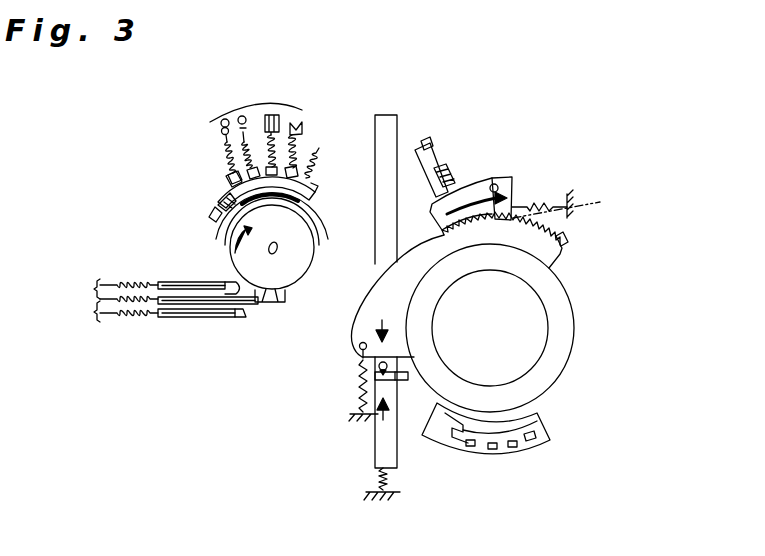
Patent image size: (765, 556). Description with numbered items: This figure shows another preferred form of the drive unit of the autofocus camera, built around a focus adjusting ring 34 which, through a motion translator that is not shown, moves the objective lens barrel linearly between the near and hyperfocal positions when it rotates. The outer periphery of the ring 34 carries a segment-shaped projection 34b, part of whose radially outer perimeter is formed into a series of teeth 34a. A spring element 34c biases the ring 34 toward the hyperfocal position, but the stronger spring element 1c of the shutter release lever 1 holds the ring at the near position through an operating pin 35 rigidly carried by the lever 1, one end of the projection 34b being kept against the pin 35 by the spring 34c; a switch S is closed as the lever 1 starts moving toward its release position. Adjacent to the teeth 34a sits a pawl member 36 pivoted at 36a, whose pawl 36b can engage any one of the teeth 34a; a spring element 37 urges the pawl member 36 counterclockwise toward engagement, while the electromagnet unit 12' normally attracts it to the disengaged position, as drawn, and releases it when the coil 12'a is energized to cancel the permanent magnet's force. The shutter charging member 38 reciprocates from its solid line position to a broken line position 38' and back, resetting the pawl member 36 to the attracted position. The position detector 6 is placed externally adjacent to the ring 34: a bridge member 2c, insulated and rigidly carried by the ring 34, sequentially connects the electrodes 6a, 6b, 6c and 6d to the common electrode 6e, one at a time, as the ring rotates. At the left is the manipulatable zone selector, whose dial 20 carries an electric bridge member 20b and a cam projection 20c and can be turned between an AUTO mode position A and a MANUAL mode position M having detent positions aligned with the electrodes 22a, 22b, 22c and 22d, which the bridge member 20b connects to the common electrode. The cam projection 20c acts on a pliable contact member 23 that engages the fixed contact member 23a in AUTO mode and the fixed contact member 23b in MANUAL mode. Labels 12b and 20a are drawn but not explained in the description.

The shutter release lever 1 is at (375, 205).
The spring element 1c is at (368, 485).
The switch S is at (407, 377).
The bridge member 2c is at (438, 437).
The position detector 6 is at (548, 428).
The electrode 6a is at (470, 455).
The electrode 6b is at (492, 456).
The electrode 6c is at (514, 454).
The electrode 6d is at (540, 450).
The common electrode 6e is at (528, 420).
The electromagnet unit 12' is at (452, 135).
The coil 12'a is at (488, 132).
The switch lug 12b is at (427, 141).
The manipulatable dial 20 is at (303, 238).
The slip ring 20a is at (230, 247).
The electric bridge member 20b is at (222, 220).
The cam projection 20c is at (282, 294).
The electrode 22a is at (228, 177).
The electrode 22b is at (226, 157).
The electrode 22c is at (278, 167).
The electrode 22d is at (296, 168).
The pliable contact member 23 is at (256, 304).
The fixed contact member 23a is at (200, 318).
The fixed contact member 23b is at (177, 280).
The MANUAL mode position M is at (183, 190).
The AUTO mode position A is at (133, 230).
The focus adjusting ring 34 is at (562, 322).
The teeth 34a is at (556, 228).
The segment-shaped projection 34b is at (553, 263).
The spring element 34c is at (360, 380).
The operating pin 35 is at (366, 364).
The pawl member 36 is at (512, 180).
The pivot 36a is at (498, 180).
The pawl 36b is at (433, 214).
The spring element 37 is at (568, 196).
The shutter charging member 38 is at (623, 249).
The broken line position of shutter charging member 38' is at (593, 195).